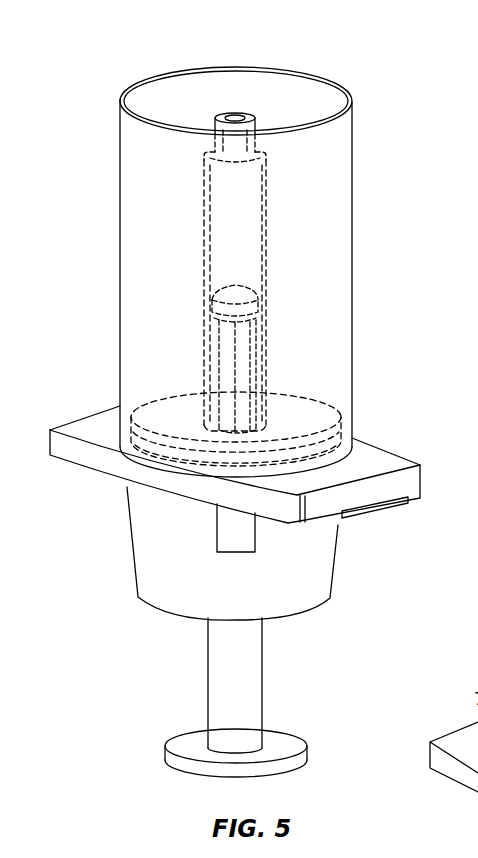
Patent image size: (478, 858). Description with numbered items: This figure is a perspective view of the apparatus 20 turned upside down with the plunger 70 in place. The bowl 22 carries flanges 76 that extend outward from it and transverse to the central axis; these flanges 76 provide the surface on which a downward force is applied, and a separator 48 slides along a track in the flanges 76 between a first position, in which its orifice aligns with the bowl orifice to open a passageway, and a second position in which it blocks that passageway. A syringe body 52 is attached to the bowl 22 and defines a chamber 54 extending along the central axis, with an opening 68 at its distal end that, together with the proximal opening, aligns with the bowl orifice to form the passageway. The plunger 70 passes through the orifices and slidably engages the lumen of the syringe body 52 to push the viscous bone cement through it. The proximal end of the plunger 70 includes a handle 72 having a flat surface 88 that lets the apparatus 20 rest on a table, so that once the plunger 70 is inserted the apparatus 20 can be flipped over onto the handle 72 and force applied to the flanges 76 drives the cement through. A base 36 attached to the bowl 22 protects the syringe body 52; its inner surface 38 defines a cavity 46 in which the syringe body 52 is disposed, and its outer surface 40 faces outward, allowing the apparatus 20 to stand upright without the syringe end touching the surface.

The apparatus 20 is at (439, 104).
The bowl 22 is at (186, 591).
The base 36 is at (353, 224).
The inner surface 38 is at (313, 98).
The outer surface 40 is at (325, 264).
The cavity 46 is at (203, 106).
The separator 48 is at (376, 513).
The syringe body 52 is at (215, 130).
The chamber 54 is at (214, 230).
The plunger 70 is at (213, 365).
The handle 72 is at (288, 750).
The flanges 76 is at (62, 448).
The flat surface 88 is at (280, 776).
The opening 68 is at (467, 849).